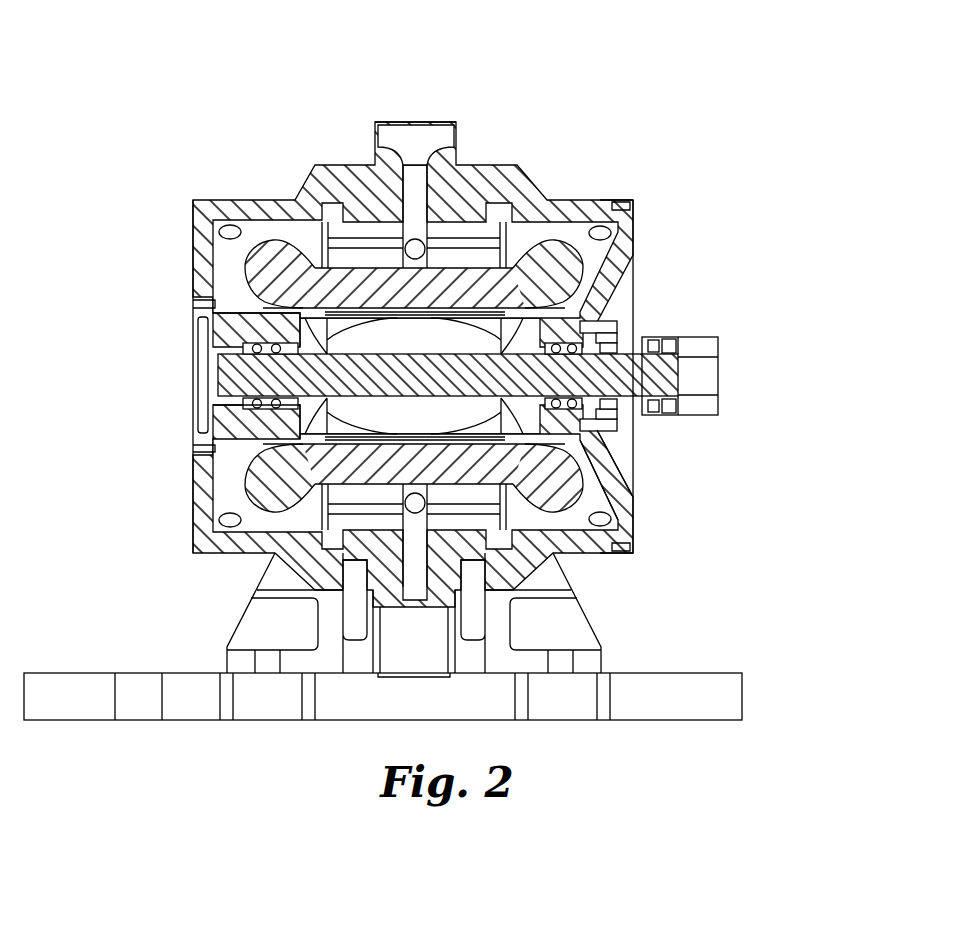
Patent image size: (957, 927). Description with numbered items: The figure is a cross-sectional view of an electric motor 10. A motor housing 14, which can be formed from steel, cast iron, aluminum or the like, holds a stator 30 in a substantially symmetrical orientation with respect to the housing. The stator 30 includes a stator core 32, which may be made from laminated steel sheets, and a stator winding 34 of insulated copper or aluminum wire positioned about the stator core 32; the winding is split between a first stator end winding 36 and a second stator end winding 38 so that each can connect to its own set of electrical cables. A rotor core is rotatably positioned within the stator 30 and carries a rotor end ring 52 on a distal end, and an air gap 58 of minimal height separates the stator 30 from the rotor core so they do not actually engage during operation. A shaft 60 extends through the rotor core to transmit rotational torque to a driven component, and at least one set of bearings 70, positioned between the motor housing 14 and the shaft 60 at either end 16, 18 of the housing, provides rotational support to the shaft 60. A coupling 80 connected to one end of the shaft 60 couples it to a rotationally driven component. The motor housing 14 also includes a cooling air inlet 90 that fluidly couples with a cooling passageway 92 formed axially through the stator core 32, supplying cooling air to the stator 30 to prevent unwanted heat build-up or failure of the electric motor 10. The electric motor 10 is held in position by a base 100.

The electric motor 10 is at (586, 97).
The motor housing 14 is at (563, 198).
The end of the motor housing 16 is at (193, 235).
The end of the motor housing 18 is at (636, 222).
The stator 30 is at (605, 470).
The stator core 32 is at (535, 556).
The stator winding 34 is at (452, 290).
The first stator end winding 36 is at (263, 265).
The second stator end winding 38 is at (560, 262).
The rotor end ring 52 is at (260, 418).
The air gap 58 is at (270, 520).
The shaft 60 is at (625, 355).
The bearings 70 is at (250, 346).
The coupling 80 is at (712, 335).
The cooling air inlet 90 is at (409, 135).
The cooling passageway 92 is at (355, 240).
The base 100 is at (655, 700).